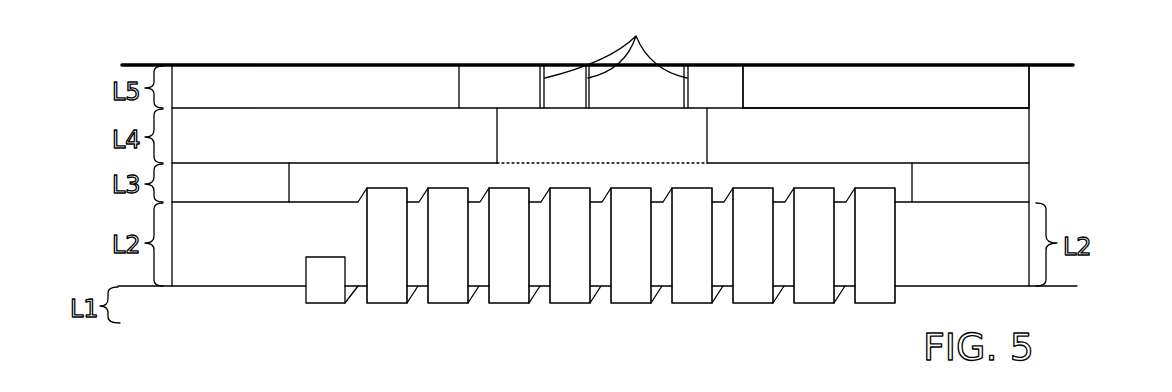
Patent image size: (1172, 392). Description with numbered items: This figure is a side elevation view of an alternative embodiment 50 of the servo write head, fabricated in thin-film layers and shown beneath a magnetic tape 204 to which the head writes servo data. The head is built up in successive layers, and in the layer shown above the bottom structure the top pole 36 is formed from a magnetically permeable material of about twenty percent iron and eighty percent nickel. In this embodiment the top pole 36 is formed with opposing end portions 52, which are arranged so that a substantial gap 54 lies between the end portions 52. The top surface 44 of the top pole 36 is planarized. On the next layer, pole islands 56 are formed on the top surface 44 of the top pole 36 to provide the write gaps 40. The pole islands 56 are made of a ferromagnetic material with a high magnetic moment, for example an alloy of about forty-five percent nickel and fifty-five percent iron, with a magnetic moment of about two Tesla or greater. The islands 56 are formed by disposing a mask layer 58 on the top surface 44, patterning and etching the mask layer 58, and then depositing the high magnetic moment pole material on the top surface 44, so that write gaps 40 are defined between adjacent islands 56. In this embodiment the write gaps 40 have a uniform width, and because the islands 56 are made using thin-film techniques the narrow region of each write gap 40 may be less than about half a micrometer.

The alternative embodiment of the servo write head 50 is at (1121, 92).
The tape 204 is at (154, 63).
The top surface 44 is at (442, 108).
The pole islands 56 is at (513, 80).
The mask layer 58 is at (896, 80).
The write gaps 40 is at (616, 45).
The top pole 36 is at (233, 150).
The end portions 52 is at (485, 150).
The gap 54 is at (620, 150).